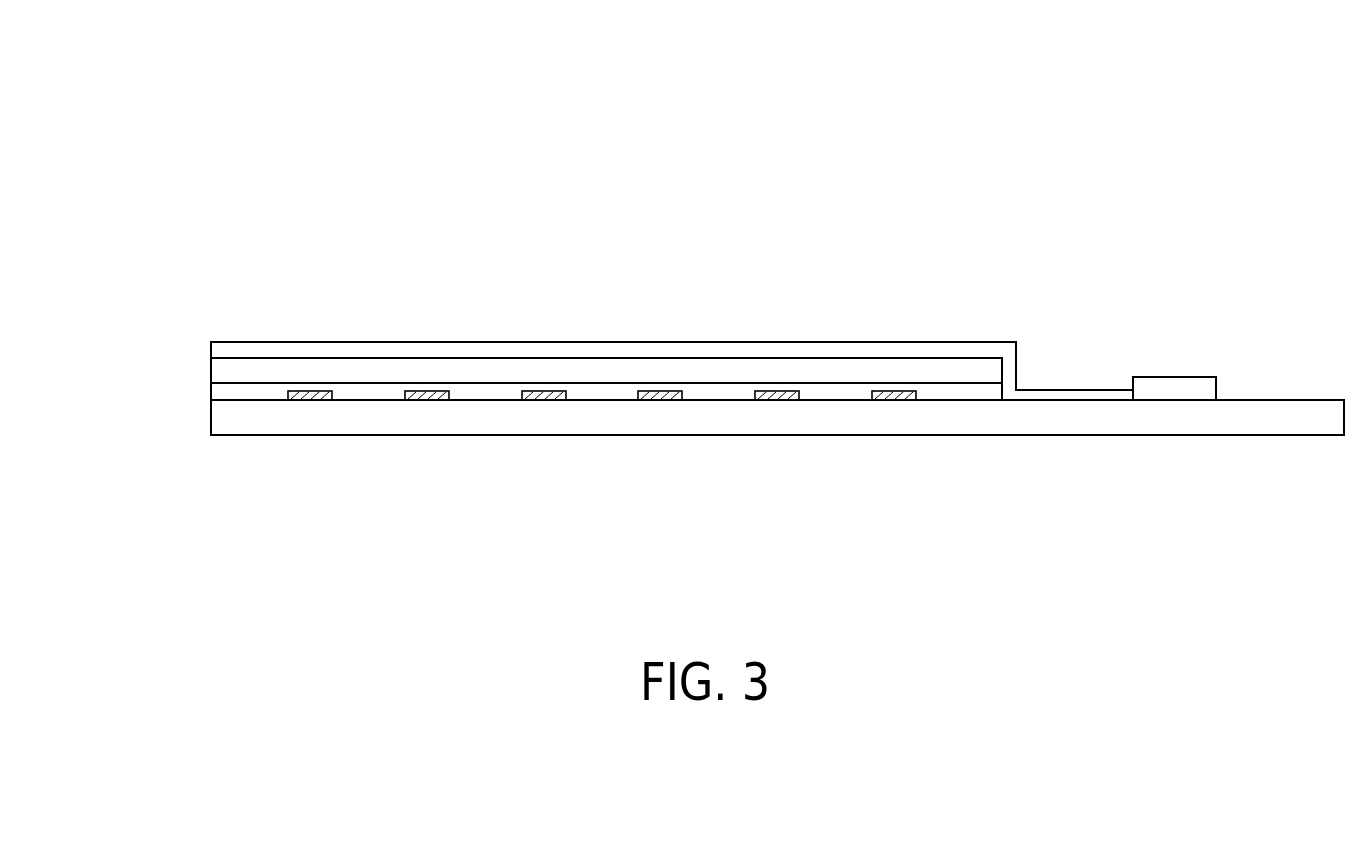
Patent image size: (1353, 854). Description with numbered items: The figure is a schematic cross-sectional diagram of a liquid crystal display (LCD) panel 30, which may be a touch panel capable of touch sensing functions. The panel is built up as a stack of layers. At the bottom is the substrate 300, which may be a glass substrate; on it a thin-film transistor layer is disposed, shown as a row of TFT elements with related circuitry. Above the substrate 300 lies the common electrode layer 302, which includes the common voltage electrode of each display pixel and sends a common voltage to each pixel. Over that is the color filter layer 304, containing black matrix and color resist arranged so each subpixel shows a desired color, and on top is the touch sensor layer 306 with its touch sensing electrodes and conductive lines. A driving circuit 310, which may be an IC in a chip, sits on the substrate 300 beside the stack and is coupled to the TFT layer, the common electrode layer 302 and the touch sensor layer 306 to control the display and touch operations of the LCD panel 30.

The liquid crystal display panel 30 is at (1047, 117).
The substrate 300 is at (223, 417).
The common electrode layer 302 is at (223, 392).
The color filter layer 304 is at (223, 370).
The touch sensor layer 306 is at (223, 350).
The driving circuit 310 is at (1182, 347).
The thin-film transistor TFT is at (313, 403).